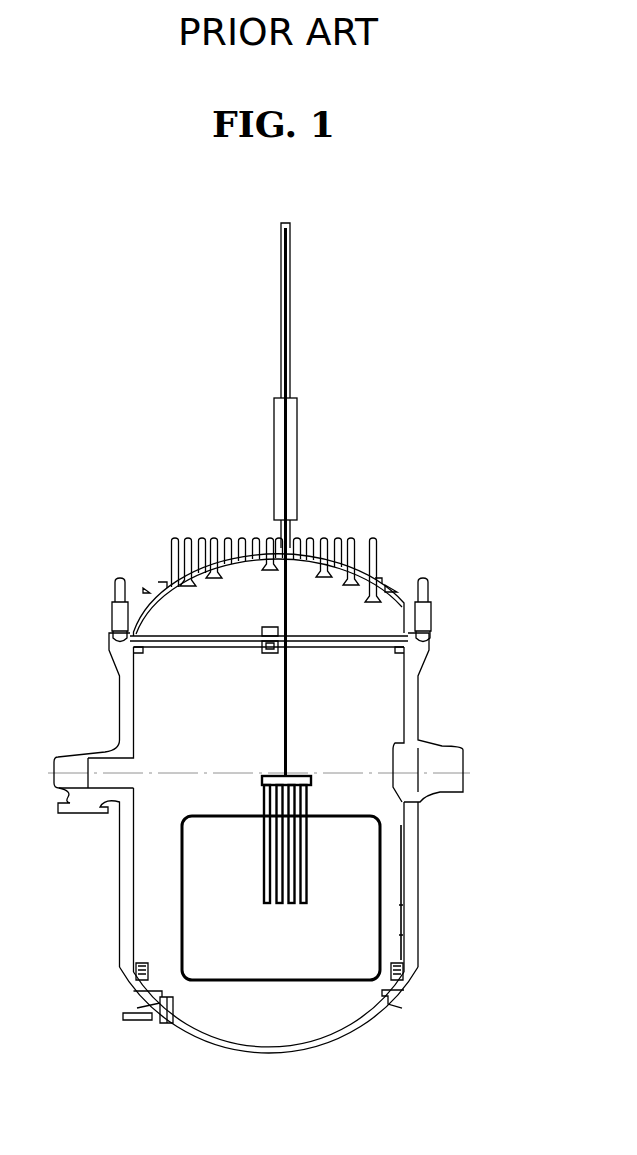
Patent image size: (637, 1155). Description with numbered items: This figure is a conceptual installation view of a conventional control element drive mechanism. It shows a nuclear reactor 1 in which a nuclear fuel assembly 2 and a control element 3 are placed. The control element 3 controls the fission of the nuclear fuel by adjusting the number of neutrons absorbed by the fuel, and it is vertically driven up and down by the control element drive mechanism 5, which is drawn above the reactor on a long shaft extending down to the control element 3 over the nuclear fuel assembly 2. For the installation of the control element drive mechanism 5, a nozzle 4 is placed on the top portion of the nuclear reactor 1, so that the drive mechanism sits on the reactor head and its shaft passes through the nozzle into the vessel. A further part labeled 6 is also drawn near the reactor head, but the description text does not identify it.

The nuclear reactor 1 is at (410, 693).
The nuclear fuel assembly 2 is at (383, 882).
The control element 3 is at (302, 803).
The nozzle 4 is at (353, 540).
The control element drive mechanism 5 is at (294, 440).
The reactor vessel head 6 is at (284, 607).